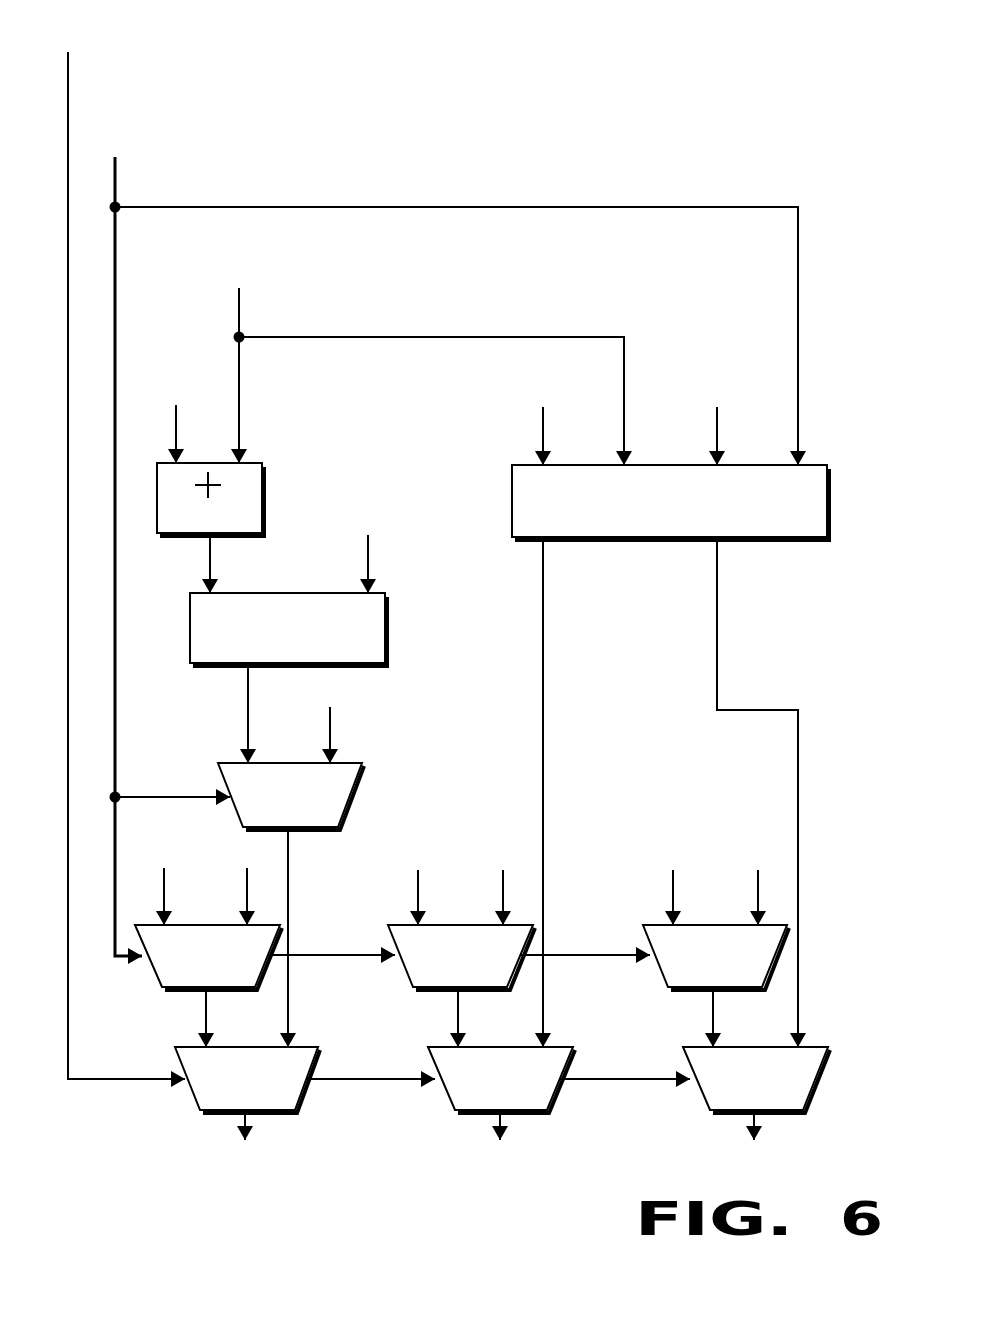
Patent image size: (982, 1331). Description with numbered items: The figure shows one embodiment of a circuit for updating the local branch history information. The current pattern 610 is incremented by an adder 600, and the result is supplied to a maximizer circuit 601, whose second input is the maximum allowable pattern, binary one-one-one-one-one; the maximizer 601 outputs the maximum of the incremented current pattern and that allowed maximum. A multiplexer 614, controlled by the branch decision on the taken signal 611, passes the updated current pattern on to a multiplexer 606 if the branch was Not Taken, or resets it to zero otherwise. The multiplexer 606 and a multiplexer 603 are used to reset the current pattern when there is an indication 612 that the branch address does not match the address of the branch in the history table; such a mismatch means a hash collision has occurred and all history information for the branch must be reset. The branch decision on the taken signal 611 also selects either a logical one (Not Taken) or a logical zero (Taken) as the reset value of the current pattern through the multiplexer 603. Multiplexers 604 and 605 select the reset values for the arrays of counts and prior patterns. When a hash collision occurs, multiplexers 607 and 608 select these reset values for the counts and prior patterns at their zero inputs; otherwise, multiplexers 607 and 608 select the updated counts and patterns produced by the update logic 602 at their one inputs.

The adder 600 is at (253, 531).
The maximizer circuit 601 is at (377, 661).
The update logic 602 is at (820, 533).
The multiplexer 603 is at (219, 982).
The multiplexer 604 is at (473, 982).
The multiplexer 605 is at (727, 982).
The multiplexer 606 is at (258, 1103).
The multiplexer 607 is at (513, 1103).
The multiplexer 608 is at (768, 1103).
The current pattern 610 is at (239, 313).
The taken signal 611 is at (115, 186).
The indication that the branch address does not match 612 is at (68, 105).
The multiplexer 614 is at (300, 821).